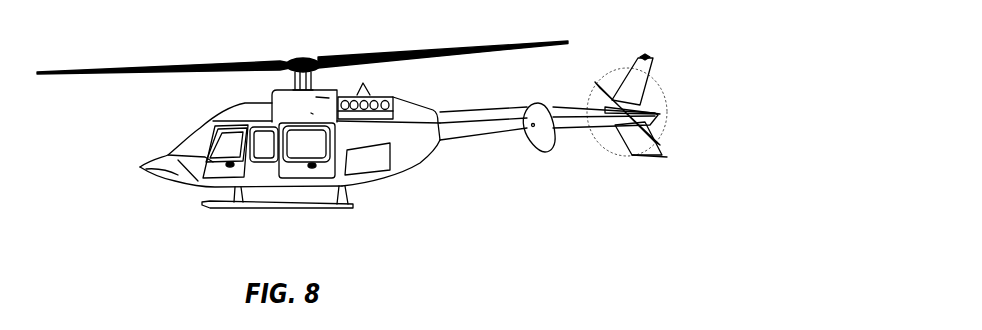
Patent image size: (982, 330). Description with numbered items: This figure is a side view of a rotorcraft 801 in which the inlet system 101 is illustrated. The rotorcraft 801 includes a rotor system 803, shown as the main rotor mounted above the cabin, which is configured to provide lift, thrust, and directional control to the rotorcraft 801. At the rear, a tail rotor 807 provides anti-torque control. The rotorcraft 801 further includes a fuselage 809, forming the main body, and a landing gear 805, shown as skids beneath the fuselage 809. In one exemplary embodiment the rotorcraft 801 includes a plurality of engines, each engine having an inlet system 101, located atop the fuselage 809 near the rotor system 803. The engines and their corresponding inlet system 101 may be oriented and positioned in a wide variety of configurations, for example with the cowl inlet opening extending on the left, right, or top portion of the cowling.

The rotorcraft 801 is at (354, 140).
The rotor system 803 is at (181, 69).
The landing gear 805 is at (331, 208).
The tail rotor 807 is at (600, 82).
The fuselage 809 is at (420, 163).
The inlet system 101 is at (331, 86).